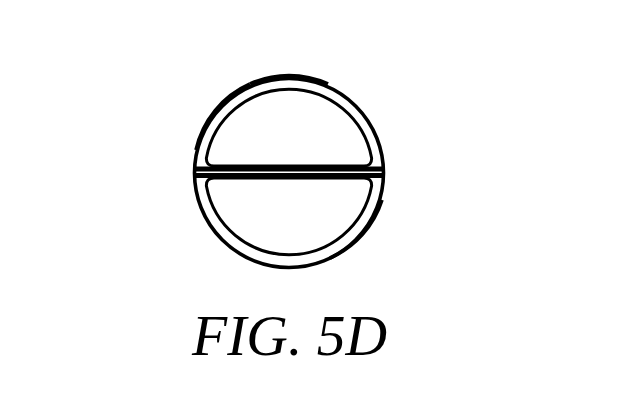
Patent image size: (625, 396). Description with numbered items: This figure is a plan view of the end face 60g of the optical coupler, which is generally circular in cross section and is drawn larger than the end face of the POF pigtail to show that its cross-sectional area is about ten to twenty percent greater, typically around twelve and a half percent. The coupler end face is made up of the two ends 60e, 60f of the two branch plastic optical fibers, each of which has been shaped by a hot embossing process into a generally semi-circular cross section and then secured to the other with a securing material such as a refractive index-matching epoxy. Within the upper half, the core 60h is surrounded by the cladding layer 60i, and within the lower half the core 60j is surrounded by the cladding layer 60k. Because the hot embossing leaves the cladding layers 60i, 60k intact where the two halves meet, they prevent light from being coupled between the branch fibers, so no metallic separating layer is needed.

The end of branch POF 60e is at (362, 108).
The end of branch POF 60f is at (355, 232).
The end face of optical coupler 60g is at (306, 77).
The core of branch POF 60h is at (272, 122).
The cladding layer of branch POF 60i is at (204, 128).
The core of branch POF 60j is at (258, 223).
The cladding layer of branch POF 60k is at (199, 208).